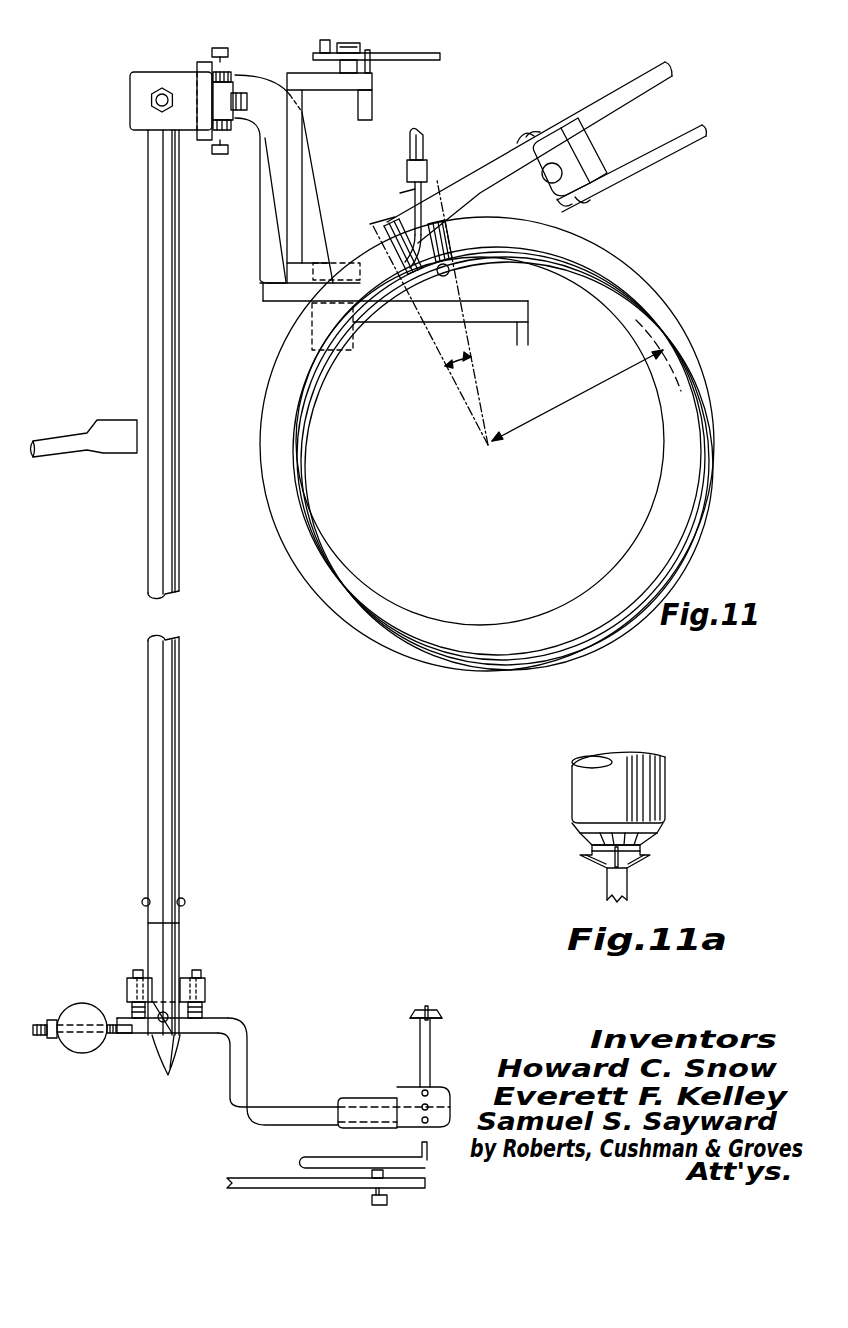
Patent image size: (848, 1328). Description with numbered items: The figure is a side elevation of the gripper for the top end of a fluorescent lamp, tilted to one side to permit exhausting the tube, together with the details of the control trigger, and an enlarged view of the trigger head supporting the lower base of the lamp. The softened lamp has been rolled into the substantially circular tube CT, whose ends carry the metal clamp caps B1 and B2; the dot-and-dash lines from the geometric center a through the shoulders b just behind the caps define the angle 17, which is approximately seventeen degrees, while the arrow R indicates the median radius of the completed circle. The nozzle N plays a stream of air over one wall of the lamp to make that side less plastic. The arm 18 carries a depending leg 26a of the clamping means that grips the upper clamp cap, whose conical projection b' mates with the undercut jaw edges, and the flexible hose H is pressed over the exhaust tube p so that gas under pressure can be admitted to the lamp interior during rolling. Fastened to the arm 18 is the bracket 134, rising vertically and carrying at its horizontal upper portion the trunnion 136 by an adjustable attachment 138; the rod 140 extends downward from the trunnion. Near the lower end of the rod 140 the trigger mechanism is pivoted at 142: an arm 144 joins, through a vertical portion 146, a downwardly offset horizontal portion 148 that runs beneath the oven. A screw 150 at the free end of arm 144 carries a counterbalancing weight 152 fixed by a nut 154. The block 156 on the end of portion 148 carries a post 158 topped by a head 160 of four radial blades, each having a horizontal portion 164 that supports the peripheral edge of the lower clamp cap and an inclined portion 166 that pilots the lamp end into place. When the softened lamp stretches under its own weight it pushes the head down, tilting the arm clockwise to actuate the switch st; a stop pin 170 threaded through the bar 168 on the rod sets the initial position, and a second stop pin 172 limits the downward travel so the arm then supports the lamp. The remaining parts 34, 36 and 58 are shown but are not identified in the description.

In FIG. 11, the trunnion 136 is at (183, 72).
In FIG. 11, the adjustable attachment 138 is at (256, 58).
In FIG. 11, the bracket 134 is at (272, 177).
In FIG. 11, the bracket 58 is at (298, 158).
In FIG. 11, the rod 140 is at (148, 323).
In FIG. 11, the nozzle N is at (105, 427).
In FIG. 11, the rolled-up circular tube CT is at (368, 613).
In FIG. 11A, the rolled-up circular tube CT is at (663, 793).
In FIG. 11, the arm 18 is at (493, 302).
In FIG. 11, the geometric center of the rolled-up tube a is at (432, 324).
In FIG. 11, the median radius of the completed circular tube R is at (577, 395).
In FIG. 11, the angle between lines a—b 17 is at (464, 357).
In FIG. 11, the arm 34 is at (610, 99).
In FIG. 11, the depending leg 26a is at (535, 162).
In FIG. 11, the arm 36 is at (652, 155).
In FIG. 11, the flexible hose H is at (420, 135).
In FIG. 11, the exhaust tube p is at (397, 191).
In FIG. 11, the shoulder of the rolled-up tube b is at (400, 195).
In FIG. 11, the metal clamp cap B1 is at (395, 245).
In FIG. 11, the metal clamp cap B2 is at (450, 276).
In FIG. 11A, the metal clamp cap B2 is at (660, 833).
In FIG. 11, the weight 152 is at (68, 1008).
In FIG. 11, the nut 154 is at (47, 1022).
In FIG. 11, the second stop pin 172 is at (130, 1003).
In FIG. 11, the bar 168 is at (185, 983).
In FIG. 11, the stop pin 170 is at (197, 1005).
In FIG. 11, the pivot 142 is at (160, 1024).
In FIG. 11, the screw 150 is at (112, 1035).
In FIG. 11, the arm 144 is at (200, 1036).
In FIG. 11, the vertical portion 146 is at (240, 1052).
In FIG. 11, the downwardly offset horizontal portion 148 is at (287, 1113).
In FIG. 11, the block 156 is at (455, 1077).
In FIG. 11, the post 158 is at (431, 1047).
In FIG. 11A, the post 158 is at (627, 891).
In FIG. 11, the head 160 is at (430, 1006).
In FIG. 11, the upwardly inclined portion 166 is at (440, 1012).
In FIG. 11A, the upwardly inclined portion 166 is at (645, 858).
In FIG. 11, the horizontal portion 164 is at (425, 1007).
In FIG. 11A, the horizontal portion 164 is at (612, 853).
In FIG. 11, the switch st is at (427, 1156).
In FIG. 11A, the conical projection b' is at (586, 846).